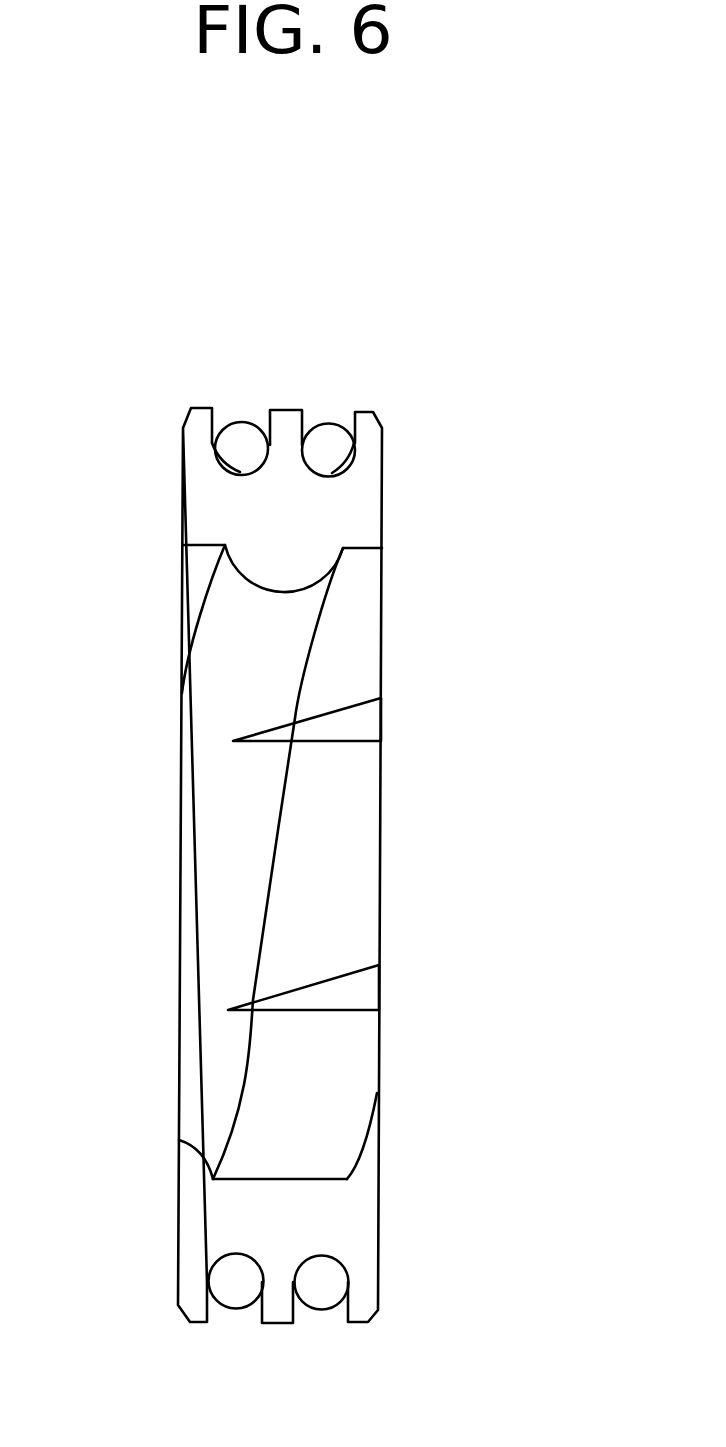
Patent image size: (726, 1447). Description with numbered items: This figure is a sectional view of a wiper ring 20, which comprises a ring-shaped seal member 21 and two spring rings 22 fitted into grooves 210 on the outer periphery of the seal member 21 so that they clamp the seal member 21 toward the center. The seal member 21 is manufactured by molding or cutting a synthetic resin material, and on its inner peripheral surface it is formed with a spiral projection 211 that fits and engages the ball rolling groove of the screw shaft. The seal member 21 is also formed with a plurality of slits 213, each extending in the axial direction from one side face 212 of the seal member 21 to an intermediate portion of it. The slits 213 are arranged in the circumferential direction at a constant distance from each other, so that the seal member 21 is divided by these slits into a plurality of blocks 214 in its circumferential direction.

The wiper ring 20 is at (532, 263).
The seal member 21 is at (367, 520).
The spring ring 22 is at (242, 431).
The groove 210 is at (213, 444).
The spiral projection 211 is at (270, 590).
The side face 212 is at (377, 1243).
The slit 213 is at (363, 727).
The block 214 is at (363, 630).